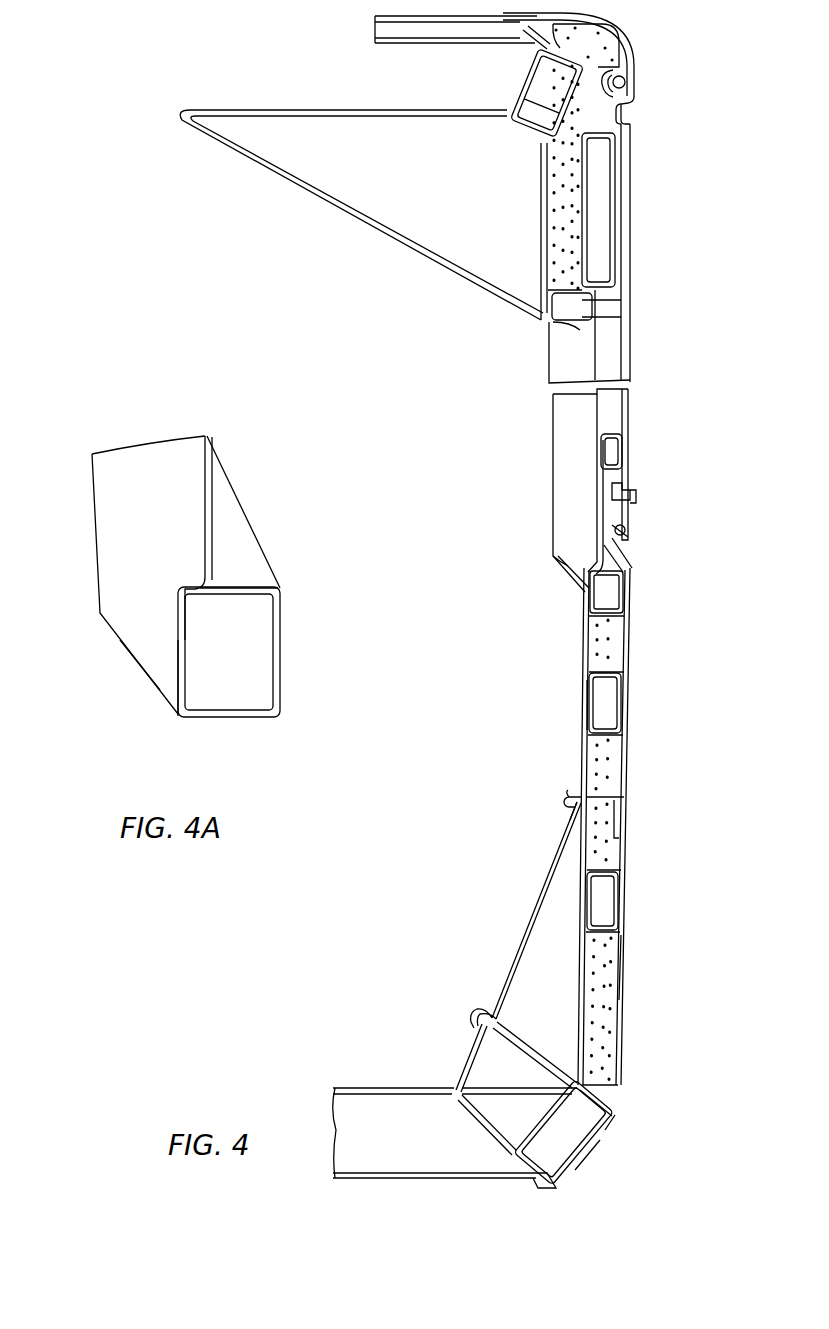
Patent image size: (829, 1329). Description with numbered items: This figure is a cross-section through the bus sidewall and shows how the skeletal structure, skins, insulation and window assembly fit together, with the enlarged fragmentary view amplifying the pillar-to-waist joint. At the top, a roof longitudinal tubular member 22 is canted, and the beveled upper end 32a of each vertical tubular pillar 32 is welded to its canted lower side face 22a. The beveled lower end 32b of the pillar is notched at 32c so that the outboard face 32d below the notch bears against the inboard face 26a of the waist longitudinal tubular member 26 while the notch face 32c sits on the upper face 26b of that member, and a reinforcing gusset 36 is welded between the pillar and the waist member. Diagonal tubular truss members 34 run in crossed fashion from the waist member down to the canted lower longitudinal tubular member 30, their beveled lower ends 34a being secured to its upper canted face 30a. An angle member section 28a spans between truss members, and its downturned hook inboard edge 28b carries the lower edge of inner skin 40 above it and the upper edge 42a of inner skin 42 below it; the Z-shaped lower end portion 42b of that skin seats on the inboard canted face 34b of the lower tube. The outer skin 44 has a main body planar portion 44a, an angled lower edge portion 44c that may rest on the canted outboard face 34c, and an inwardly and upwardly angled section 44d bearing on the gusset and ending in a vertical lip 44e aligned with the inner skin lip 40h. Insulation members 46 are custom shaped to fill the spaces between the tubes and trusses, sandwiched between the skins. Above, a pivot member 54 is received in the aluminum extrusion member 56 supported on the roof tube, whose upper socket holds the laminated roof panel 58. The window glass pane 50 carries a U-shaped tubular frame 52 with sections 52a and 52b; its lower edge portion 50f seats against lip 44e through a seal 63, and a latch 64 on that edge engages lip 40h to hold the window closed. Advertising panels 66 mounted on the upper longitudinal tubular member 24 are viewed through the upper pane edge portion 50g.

In FIG. 4, the roof longitudinal tubular member 22 is at (528, 132).
In FIG. 4, the canted lower side face 22a is at (624, 83).
In FIG. 4, the upper longitudinal tubular member 24 is at (552, 328).
In FIG. 4, the waist longitudinal tubular member 26 is at (592, 608).
In FIG. 4A, the waist longitudinal tubular member 26 is at (284, 655).
In FIG. 4A, the inboard face of waist member 26a is at (180, 704).
In FIG. 4A, the upper face of waist member 26b is at (248, 588).
In FIG. 4, the angle member section 28a is at (622, 828).
In FIG. 4, the inboard edge of angle member section 28b is at (570, 800).
In FIG. 4, the lower longitudinal tubular member 30 is at (575, 1170).
In FIG. 4, the upper canted face of lower member 30a is at (606, 1108).
In FIG. 4, the vertical tubular pillar 32 is at (552, 452).
In FIG. 4A, the vertical tubular pillar 32 is at (92, 533).
In FIG. 4, the upper end of pillar 32a is at (520, 97).
In FIG. 4, the lower end of pillar 32b is at (572, 580).
In FIG. 4A, the lower end of pillar 32b is at (128, 670).
In FIG. 4A, the notch face of pillar 32c is at (203, 596).
In FIG. 4A, the outboard face of pillar 32d is at (203, 666).
In FIG. 4, the diagonal tubular truss member 34 is at (600, 707).
In FIG. 4, the lower end of truss member 34a is at (618, 1130).
In FIG. 4, the inboard canted face 34b is at (540, 1135).
In FIG. 4, the canted outboard face 34c is at (590, 1158).
In FIG. 4, the reinforcing gusset 36 is at (598, 557).
In FIG. 4A, the reinforcing gusset 36 is at (230, 534).
In FIG. 4, the inner skin member 40 is at (582, 690).
In FIG. 4, the downturned lip section of inner skin 40h is at (628, 482).
In FIG. 4, the inner skin member 42 is at (540, 886).
In FIG. 4, the upper edge of inner skin 42a is at (580, 796).
In FIG. 4, the Z-shaped lower end portion 42b is at (488, 1060).
In FIG. 4, the outer skin member 44 is at (627, 992).
In FIG. 4, the main body planar portion of outer skin 44a is at (625, 960).
In FIG. 4, the angled lower edge portion of outer skin 44c is at (556, 1186).
In FIG. 4, the inwardly and upwardly angled section 44d is at (620, 562).
In FIG. 4, the vertical lip section of outer skin 44e is at (625, 546).
In FIG. 4, the insulation member 46 is at (608, 653).
In FIG. 4, the glass pane 50 is at (634, 279).
In FIG. 4, the lower edge portion of pane 50f is at (632, 515).
In FIG. 4, the upper pane edge portion 50g is at (622, 172).
In FIG. 4, the frame 52 is at (598, 406).
In FIG. 4, the frame section 52a is at (597, 423).
In FIG. 4, the frame section 52b is at (598, 470).
In FIG. 4, the pivot member 54 is at (628, 112).
In FIG. 4, the extrusion member 56 is at (648, 62).
In FIG. 4, the roof panel 58 is at (398, 46).
In FIG. 4, the seal 63 is at (630, 533).
In FIG. 4, the latch 64 is at (638, 490).
In FIG. 4, the advertising panel 66 is at (616, 42).